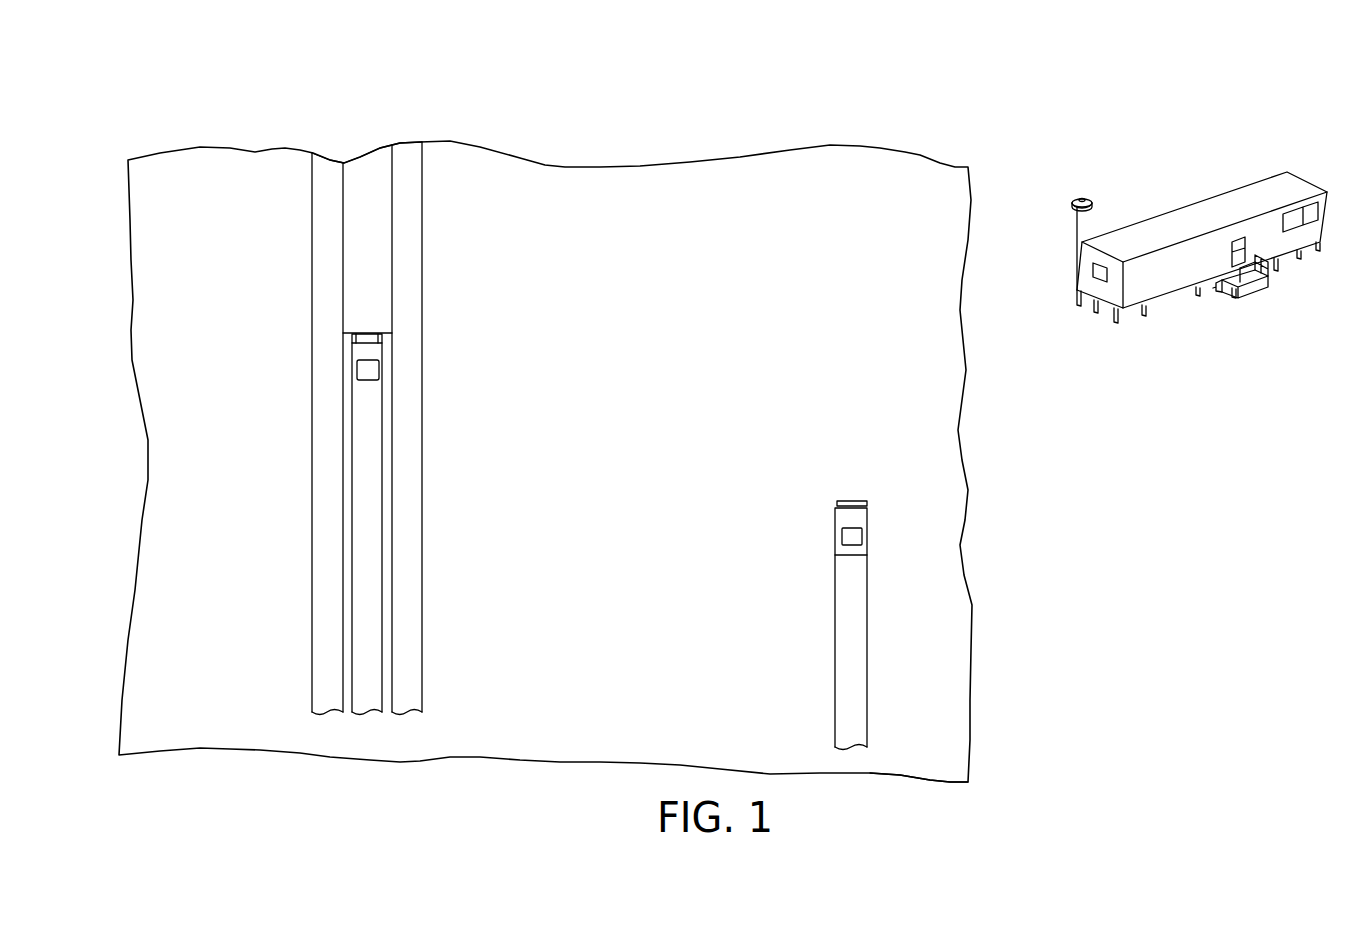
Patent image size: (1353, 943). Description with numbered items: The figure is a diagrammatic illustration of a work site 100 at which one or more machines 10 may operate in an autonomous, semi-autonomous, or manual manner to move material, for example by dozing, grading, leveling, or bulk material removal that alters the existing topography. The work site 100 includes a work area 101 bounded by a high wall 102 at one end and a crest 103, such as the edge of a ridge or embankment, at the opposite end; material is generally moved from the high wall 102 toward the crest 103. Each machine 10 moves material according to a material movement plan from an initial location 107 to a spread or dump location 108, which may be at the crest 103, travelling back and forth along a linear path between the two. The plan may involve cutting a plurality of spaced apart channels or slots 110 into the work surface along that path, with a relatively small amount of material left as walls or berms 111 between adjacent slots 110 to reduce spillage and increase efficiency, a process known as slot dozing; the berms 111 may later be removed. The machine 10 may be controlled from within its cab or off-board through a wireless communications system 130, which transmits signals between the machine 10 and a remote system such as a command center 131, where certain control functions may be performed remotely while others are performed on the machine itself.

The work site 100 is at (170, 121).
The work area 101 is at (183, 303).
The high wall 102 is at (888, 774).
The crest 103 is at (257, 150).
The dump location 108 is at (374, 130).
The slots 110 is at (368, 522).
The berms 111 is at (345, 460).
The machine 10 is at (363, 383).
The initial location 107 is at (432, 730).
The wireless communications system 130 is at (1093, 200).
The command center 131 is at (1210, 223).